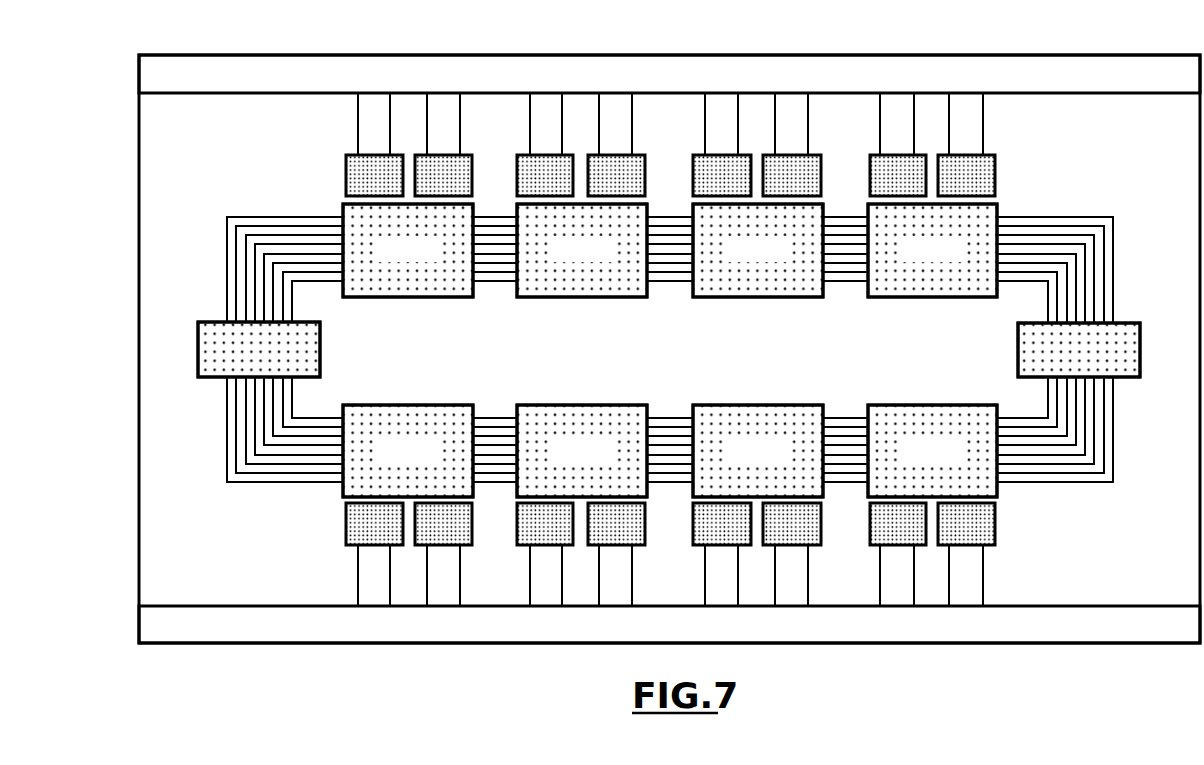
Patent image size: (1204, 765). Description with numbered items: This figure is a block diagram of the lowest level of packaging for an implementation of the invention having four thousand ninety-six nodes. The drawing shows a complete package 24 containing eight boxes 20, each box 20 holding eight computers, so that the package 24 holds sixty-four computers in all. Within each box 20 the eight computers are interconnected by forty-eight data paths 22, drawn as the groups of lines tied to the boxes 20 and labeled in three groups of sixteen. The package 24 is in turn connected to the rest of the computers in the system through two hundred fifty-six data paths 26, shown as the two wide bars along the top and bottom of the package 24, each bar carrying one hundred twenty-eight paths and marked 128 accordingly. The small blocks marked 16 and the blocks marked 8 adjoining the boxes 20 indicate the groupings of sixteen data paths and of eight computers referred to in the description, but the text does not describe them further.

The bus interface module 8 is at (669, 349).
The input/output ports 16 is at (670, 350).
The box 20 is at (410, 297).
The data paths 22 is at (1046, 482).
The package 24 is at (139, 183).
The data paths 26 is at (669, 352).
The bus connector bars 128 is at (669, 349).